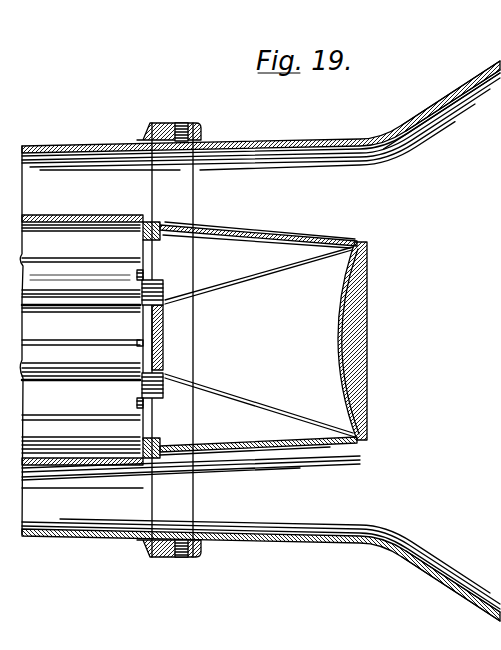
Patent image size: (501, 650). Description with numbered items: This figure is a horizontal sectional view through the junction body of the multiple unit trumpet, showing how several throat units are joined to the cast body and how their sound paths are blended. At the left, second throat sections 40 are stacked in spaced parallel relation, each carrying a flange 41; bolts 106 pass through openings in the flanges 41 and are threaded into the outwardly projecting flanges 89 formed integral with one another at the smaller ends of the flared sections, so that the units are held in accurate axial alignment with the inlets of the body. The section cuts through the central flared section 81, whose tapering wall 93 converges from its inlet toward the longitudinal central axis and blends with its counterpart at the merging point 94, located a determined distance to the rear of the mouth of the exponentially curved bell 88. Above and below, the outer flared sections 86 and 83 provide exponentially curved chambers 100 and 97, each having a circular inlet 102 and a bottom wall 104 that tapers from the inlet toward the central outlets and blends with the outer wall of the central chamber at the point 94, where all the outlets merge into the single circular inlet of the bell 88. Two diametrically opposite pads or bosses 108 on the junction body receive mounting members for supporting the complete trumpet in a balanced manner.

The second throat section 40 is at (72, 147).
The flange 41 is at (152, 122).
The flared section 81 is at (262, 356).
The flared section 83 is at (252, 546).
The flared section 86 is at (262, 141).
The exponentially curved bell 88 is at (452, 113).
The outwardly projecting flange 89 is at (165, 236).
The tapering wall 93 is at (250, 398).
The merging point 94 is at (367, 311).
The exponentially curved chamber 97 is at (286, 521).
The exponentially curved chamber 100 is at (306, 158).
The circular inlet 102 is at (166, 183).
The bottom wall 104 is at (282, 233).
The bolt 106 is at (137, 275).
The pad or boss 108 is at (195, 123).